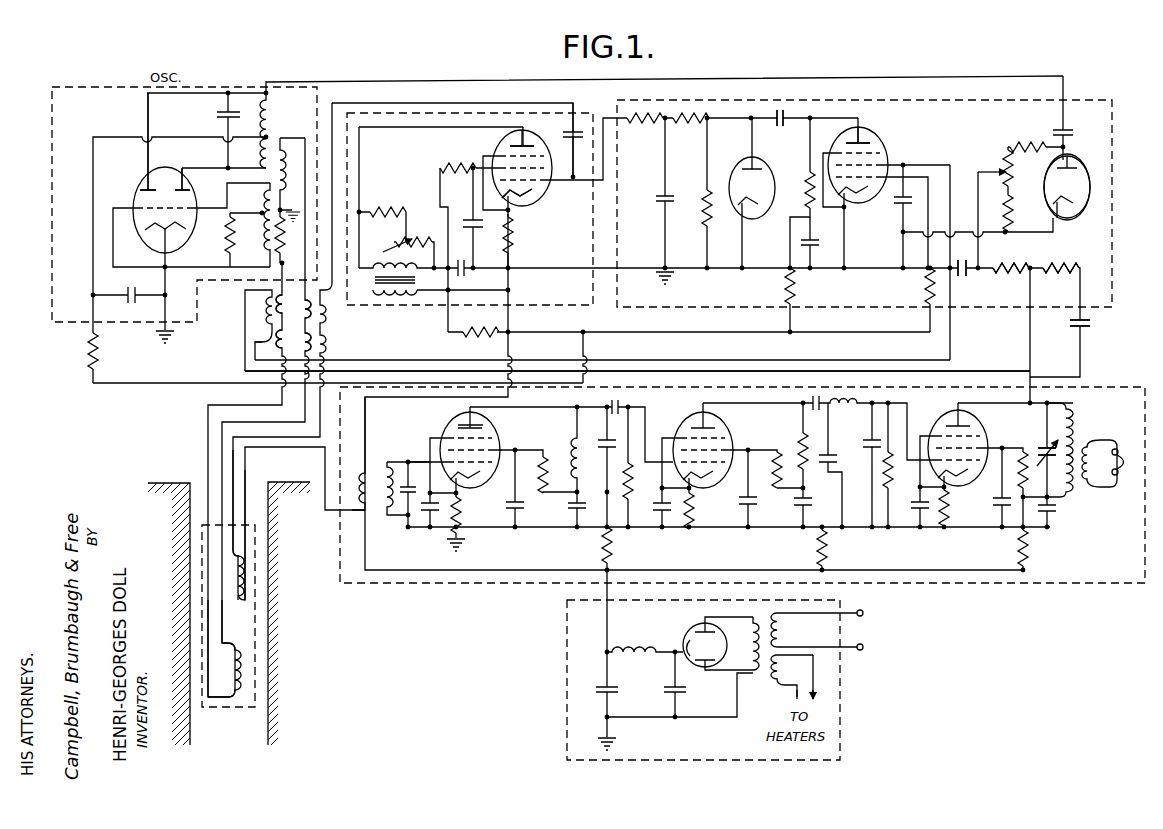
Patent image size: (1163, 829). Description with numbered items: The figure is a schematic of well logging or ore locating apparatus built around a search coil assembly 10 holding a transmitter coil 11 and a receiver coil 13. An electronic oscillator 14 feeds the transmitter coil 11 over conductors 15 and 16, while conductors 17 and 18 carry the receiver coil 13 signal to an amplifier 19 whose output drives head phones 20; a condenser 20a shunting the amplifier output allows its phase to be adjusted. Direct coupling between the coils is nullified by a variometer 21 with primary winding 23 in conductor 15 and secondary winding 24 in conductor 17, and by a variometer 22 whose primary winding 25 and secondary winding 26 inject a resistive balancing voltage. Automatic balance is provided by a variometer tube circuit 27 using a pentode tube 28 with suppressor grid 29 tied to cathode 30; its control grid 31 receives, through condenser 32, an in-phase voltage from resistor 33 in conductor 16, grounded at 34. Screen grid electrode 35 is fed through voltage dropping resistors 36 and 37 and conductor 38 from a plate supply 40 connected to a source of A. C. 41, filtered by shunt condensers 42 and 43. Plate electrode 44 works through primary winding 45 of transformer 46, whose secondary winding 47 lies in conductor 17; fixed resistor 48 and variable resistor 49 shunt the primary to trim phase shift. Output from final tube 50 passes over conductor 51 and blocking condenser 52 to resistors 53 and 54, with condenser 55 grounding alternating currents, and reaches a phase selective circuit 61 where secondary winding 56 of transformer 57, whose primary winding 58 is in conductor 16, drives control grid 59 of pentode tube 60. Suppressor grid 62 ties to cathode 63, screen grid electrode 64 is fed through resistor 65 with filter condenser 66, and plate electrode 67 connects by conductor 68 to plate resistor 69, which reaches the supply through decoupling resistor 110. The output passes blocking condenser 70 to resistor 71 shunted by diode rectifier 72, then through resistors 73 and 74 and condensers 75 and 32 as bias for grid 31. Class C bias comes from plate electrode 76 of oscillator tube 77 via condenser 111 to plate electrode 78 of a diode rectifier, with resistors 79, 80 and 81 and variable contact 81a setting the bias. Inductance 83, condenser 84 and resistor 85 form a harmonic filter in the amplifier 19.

The search coil assembly 10 is at (255, 645).
The transmitter coil 11 is at (242, 675).
The receiver coil 13 is at (242, 577).
The electronic oscillator 14 is at (87, 87).
The energizing conductor 15 is at (223, 632).
The energizing conductor 16 is at (210, 615).
The conductor 17 is at (234, 464).
The conductor 18 is at (246, 484).
The amplifier 19 is at (474, 584).
The head phones 20 is at (1108, 440).
The condenser 20a is at (1058, 470).
The variometer 21 is at (327, 357).
The variometer 22 is at (327, 330).
The primary winding 23 is at (333, 337).
The secondary winding 24 is at (325, 345).
The primary winding 25 is at (333, 297).
The secondary winding 26 is at (325, 308).
The variometer tube circuit 27 is at (470, 113).
The electronic tube 28 is at (492, 138).
The suppressor grid 29 is at (545, 157).
The cathode 30 is at (526, 206).
The control grid 31 is at (533, 197).
The condenser 32 is at (580, 125).
The resistor 33 is at (272, 241).
The ground 34 is at (266, 210).
The screen grid electrode 35 is at (546, 181).
The voltage dropping resistor 36 is at (440, 167).
The voltage dropping resistor 37 is at (480, 334).
The conductor 38 is at (858, 332).
The plate supply 40 is at (567, 661).
The source of A. C. 41 is at (850, 630).
The shunt condenser 42 is at (457, 251).
The shunt condenser 43 is at (469, 214).
The plate electrode 44 is at (531, 142).
The primary winding 45 is at (403, 258).
The transformer 46 is at (372, 279).
The secondary winding 47 is at (396, 298).
The fixed resistor 48 is at (392, 207).
The variable resistor 49 is at (403, 252).
The final tube 50 is at (946, 418).
The conductor 51 is at (1091, 317).
The D. C. blocking condenser 52 is at (1090, 331).
The resistor 53 is at (1061, 278).
The resistor 54 is at (1012, 258).
The condenser 55 is at (964, 276).
The secondary winding 56 is at (262, 312).
The transformer 57 is at (270, 346).
The primary winding 58 is at (274, 334).
The control grid 59 is at (868, 200).
The pentode tube 60 is at (881, 143).
The phase selective circuit 61 is at (835, 100).
The suppressor grid 62 is at (882, 154).
The cathode 63 is at (842, 212).
The screen grid electrode 64 is at (884, 166).
The voltage dropping resistor 65 is at (925, 284).
The filter condenser 66 is at (902, 222).
The plate electrode 67 is at (869, 130).
The conductor 68 is at (850, 120).
The plate resistor 69 is at (808, 188).
The blocking condenser 70 is at (778, 110).
The resistor 71 is at (711, 185).
The diode rectifier 72 is at (774, 165).
The series resistor 73 is at (685, 122).
The series resistor 74 is at (640, 122).
The condenser 75 is at (670, 190).
The plate electrode 76 is at (140, 180).
The oscillator tube 77 is at (178, 167).
The plate electrode 78 is at (1073, 162).
The resistor 79 is at (1023, 143).
The resistor 80 is at (1006, 158).
The resistor 81 is at (1012, 206).
The variable contact 81a is at (992, 171).
The inductance 83 is at (571, 450).
The condenser 84 is at (596, 454).
The resistor 85 is at (647, 476).
The decoupling resistor 110 is at (796, 288).
The D. C. blocking condenser 111 is at (1072, 131).